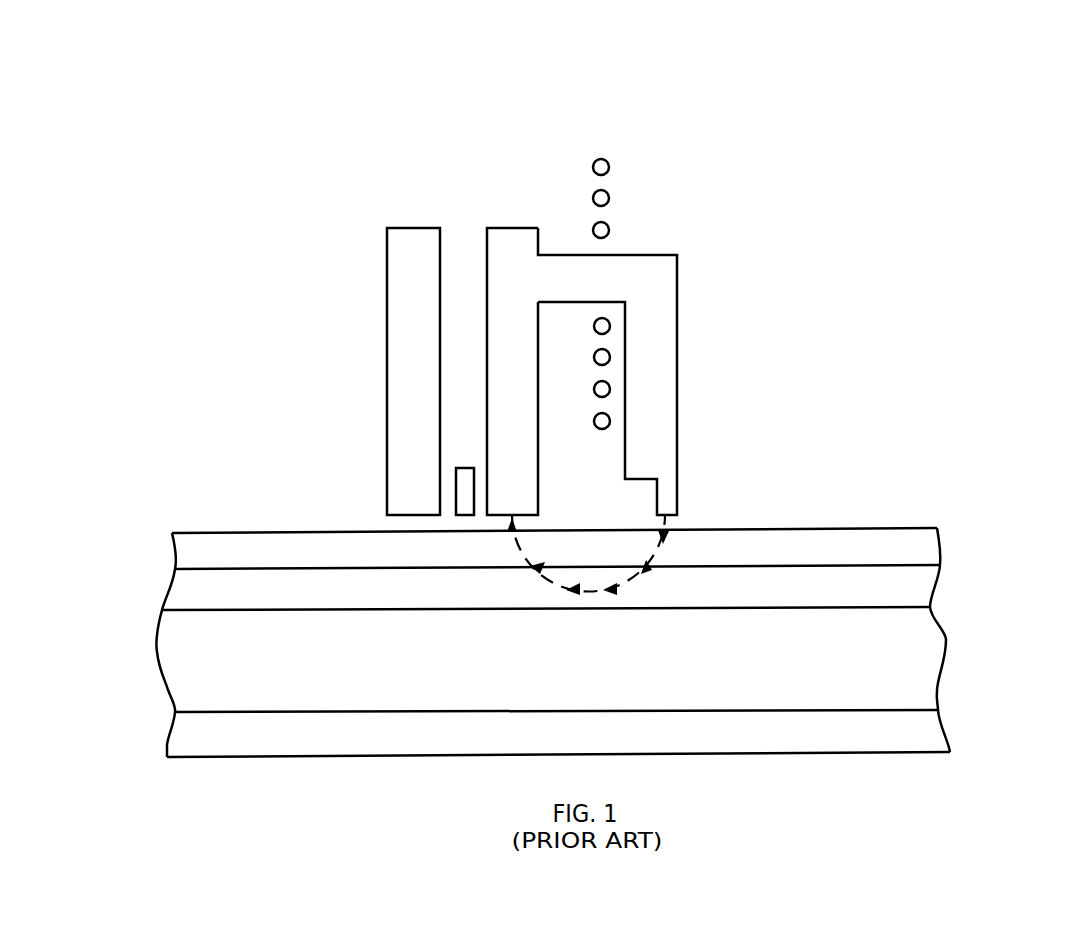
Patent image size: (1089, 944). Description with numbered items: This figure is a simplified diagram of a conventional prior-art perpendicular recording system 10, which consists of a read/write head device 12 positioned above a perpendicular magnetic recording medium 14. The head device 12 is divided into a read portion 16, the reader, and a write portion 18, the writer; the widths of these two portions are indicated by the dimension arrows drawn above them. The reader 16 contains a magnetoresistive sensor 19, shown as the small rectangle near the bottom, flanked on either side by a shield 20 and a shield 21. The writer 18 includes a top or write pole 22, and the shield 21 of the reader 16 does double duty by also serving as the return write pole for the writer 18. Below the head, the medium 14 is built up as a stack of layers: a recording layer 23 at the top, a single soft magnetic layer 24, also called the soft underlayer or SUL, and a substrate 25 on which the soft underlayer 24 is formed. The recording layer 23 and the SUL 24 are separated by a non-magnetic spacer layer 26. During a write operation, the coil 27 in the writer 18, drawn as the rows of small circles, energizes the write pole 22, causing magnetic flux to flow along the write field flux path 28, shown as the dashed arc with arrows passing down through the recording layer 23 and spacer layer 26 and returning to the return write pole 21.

The perpendicular recording system 10 is at (852, 51).
The read/write head device 12 is at (766, 280).
The perpendicular magnetic recording medium 14 is at (959, 631).
The read portion 16 is at (538, 143).
The write portion 18 is at (673, 68).
The magnetoresistive sensor 19 is at (460, 468).
The shield 20 is at (387, 278).
The shield 21 is at (510, 228).
The write pole 22 is at (677, 370).
The recording layer 23 is at (331, 553).
The soft magnetic layer 24 is at (365, 666).
The substrate 25 is at (293, 735).
The spacer layer 26 is at (309, 591).
The coil 27 is at (631, 194).
The write field flux path 28 is at (620, 585).